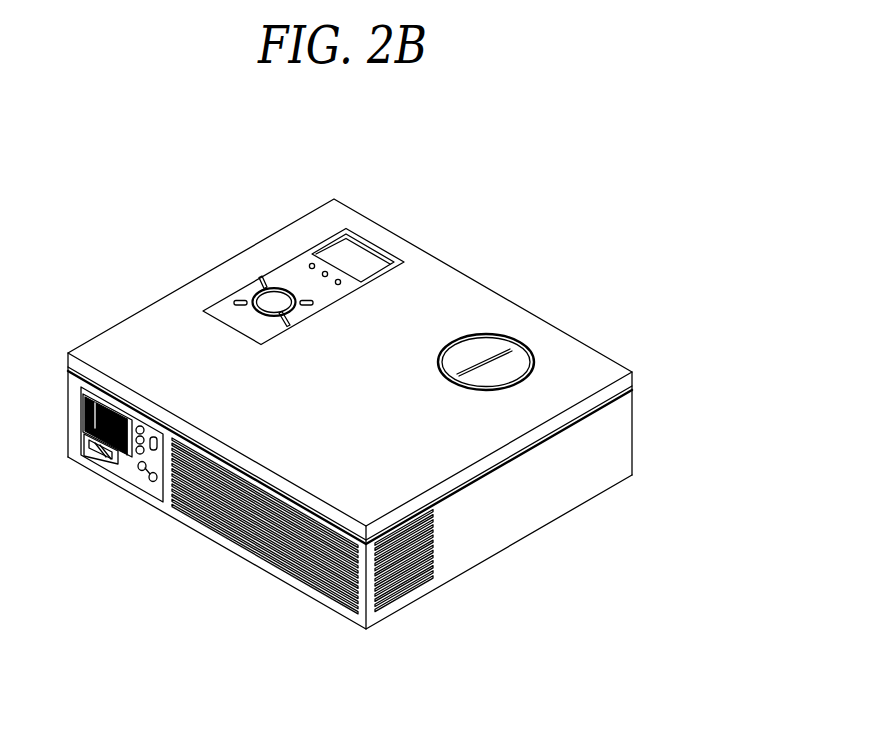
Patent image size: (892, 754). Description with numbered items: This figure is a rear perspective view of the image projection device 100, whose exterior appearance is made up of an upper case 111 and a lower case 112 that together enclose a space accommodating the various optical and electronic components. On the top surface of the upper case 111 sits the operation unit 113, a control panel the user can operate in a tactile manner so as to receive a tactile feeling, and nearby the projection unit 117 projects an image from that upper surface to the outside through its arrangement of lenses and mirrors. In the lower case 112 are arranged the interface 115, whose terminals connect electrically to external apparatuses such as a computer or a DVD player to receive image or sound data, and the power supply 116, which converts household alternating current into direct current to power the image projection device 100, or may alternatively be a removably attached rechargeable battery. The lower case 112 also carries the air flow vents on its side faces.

The image projection device 100 is at (541, 298).
The upper case 111 is at (634, 376).
The lower case 112 is at (634, 449).
The operation unit 113 is at (295, 272).
The interface 115 is at (138, 463).
The power supply 116 is at (104, 458).
The projection unit 117 is at (484, 347).